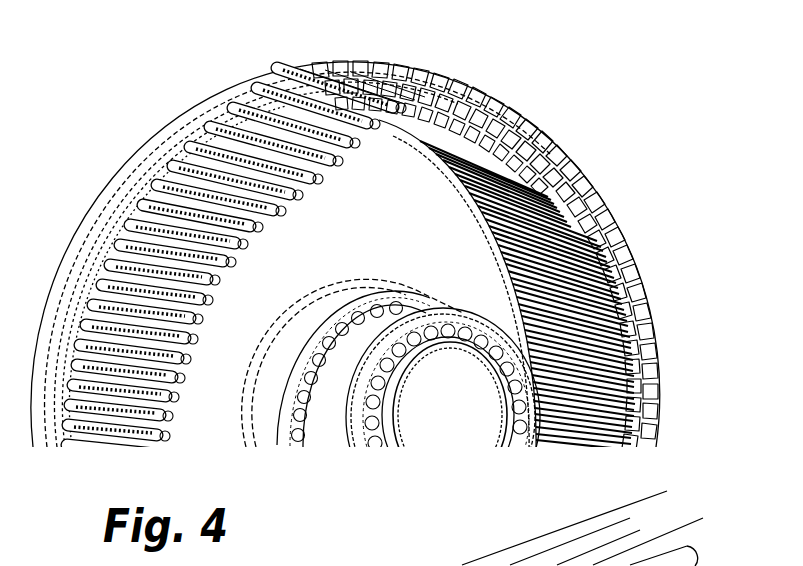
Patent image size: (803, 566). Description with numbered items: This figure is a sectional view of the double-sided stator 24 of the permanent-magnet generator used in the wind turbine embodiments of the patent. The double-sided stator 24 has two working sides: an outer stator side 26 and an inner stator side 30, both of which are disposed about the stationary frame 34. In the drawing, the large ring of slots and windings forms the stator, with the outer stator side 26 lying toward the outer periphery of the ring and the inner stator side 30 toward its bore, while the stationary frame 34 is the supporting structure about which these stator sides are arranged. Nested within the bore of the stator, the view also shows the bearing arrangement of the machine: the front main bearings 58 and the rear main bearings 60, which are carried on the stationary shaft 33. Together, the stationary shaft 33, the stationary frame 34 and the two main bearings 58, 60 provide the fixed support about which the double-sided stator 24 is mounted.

The double-sided stator 24 is at (232, 106).
The outer stator side 26 is at (262, 92).
The inner stator side 30 is at (609, 367).
The stationary shaft 33 is at (495, 425).
The stationary frame 34 is at (162, 133).
The front main bearings 58 is at (371, 437).
The rear main bearings 60 is at (298, 443).